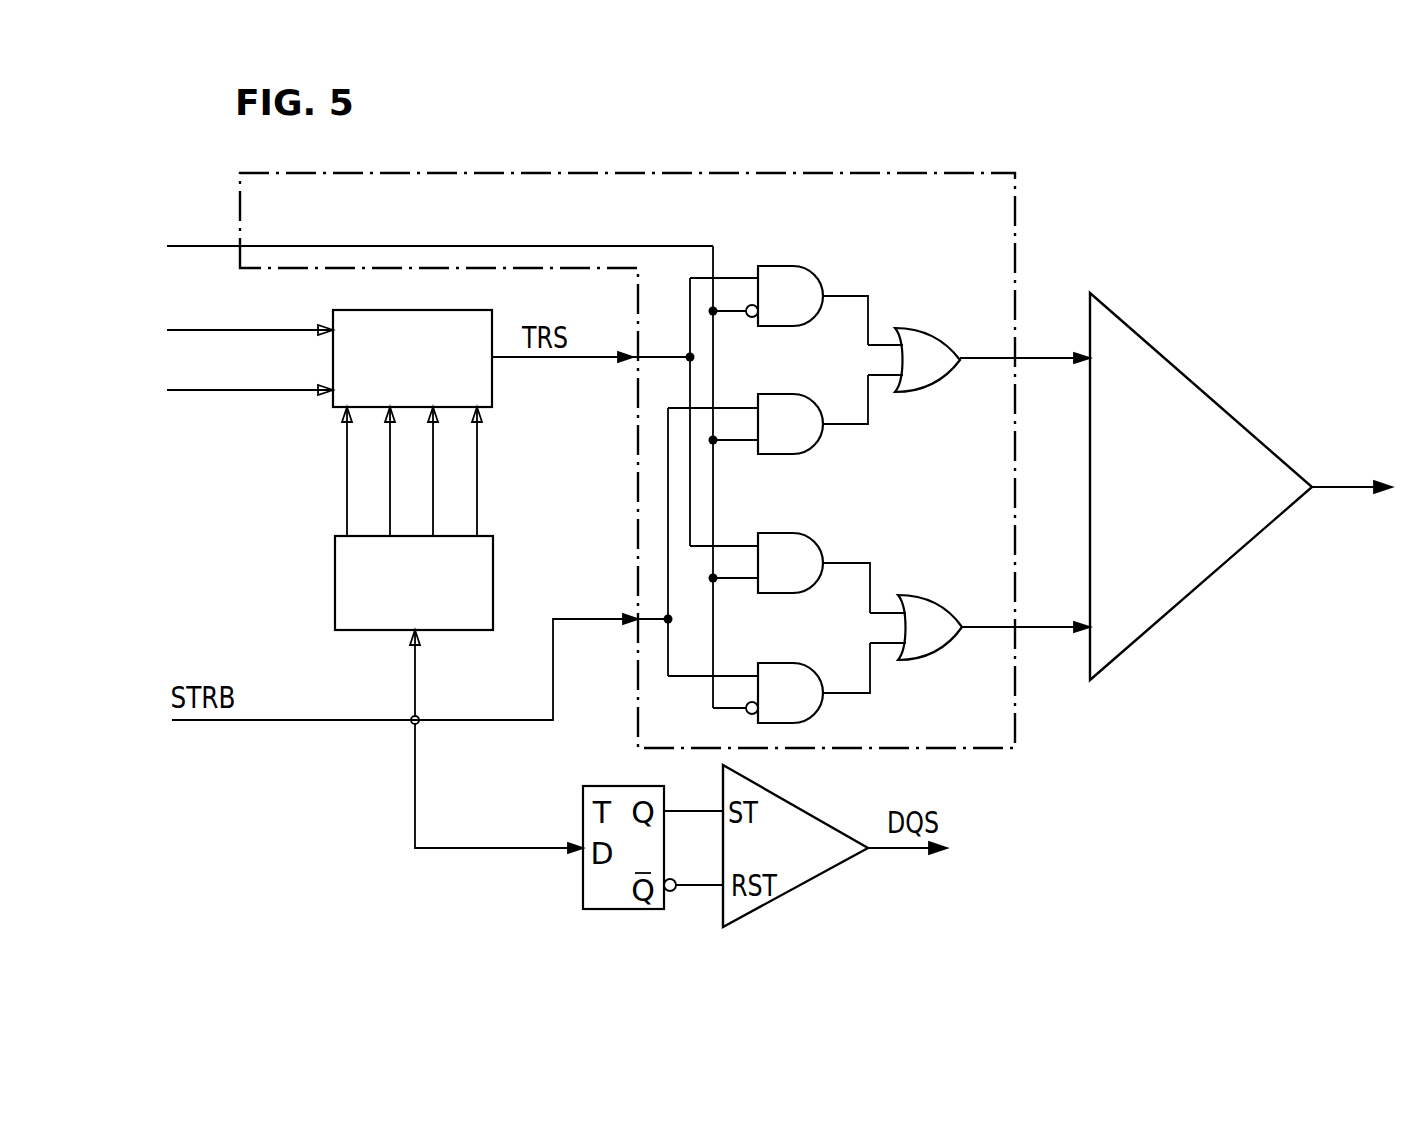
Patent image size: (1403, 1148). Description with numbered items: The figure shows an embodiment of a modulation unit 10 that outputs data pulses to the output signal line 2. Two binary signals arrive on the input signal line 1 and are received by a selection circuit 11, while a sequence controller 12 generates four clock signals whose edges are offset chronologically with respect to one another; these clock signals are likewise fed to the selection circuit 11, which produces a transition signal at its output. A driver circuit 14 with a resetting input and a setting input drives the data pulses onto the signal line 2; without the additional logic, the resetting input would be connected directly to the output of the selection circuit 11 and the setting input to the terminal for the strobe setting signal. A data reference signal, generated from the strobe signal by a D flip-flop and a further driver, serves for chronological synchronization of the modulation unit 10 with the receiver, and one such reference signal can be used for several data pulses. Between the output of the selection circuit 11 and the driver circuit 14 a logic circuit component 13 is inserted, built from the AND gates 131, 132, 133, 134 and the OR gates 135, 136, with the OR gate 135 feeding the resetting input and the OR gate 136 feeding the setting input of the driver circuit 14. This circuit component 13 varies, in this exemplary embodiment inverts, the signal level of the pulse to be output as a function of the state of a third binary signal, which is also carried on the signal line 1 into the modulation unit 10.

The signal line 1 is at (160, 225).
The signal line 2 is at (1345, 497).
The modulation unit 10 is at (665, 411).
The selection circuit 11 is at (492, 378).
The sequence controller 12 is at (335, 577).
The logic circuit component 13 is at (633, 171).
The driver circuit 14 is at (1207, 395).
The AND gate 131 is at (785, 266).
The AND gate 132 is at (785, 394).
The AND gate 133 is at (790, 533).
The AND gate 134 is at (790, 663).
The OR gate 135 is at (937, 331).
The OR gate 136 is at (938, 598).